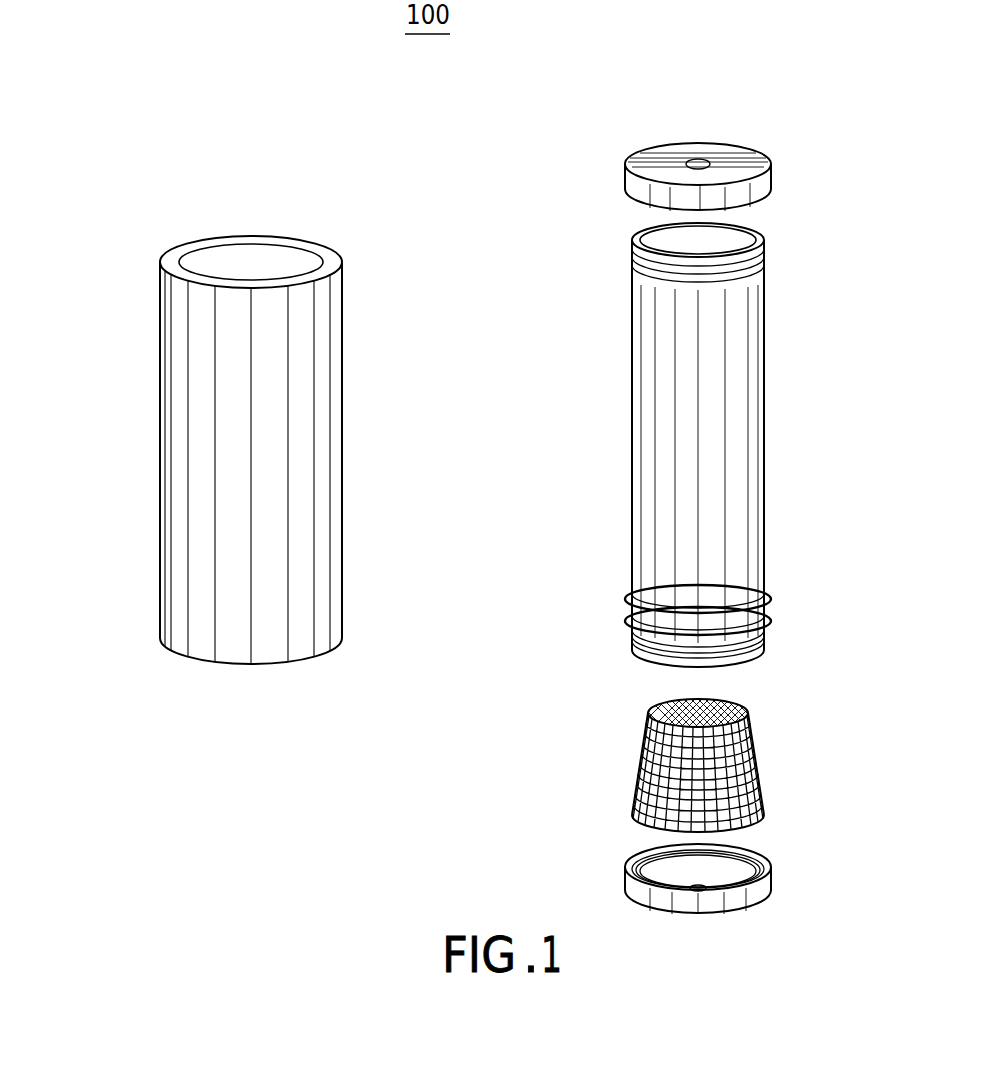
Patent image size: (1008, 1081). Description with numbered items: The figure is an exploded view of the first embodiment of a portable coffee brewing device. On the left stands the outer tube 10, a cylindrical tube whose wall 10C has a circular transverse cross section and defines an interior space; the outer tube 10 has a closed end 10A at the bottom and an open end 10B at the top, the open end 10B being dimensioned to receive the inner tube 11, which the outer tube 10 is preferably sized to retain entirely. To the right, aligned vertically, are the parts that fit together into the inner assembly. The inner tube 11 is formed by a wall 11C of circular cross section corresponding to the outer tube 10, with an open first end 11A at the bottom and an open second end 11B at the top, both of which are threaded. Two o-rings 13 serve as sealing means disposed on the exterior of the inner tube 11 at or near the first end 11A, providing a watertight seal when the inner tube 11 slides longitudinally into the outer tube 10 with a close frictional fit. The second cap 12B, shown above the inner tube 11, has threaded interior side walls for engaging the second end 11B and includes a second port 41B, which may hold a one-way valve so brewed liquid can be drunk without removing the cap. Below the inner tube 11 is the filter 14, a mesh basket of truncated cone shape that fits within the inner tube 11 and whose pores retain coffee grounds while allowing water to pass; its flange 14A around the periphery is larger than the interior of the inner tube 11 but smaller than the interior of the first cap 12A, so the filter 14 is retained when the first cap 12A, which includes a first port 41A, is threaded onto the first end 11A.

The outer tube 10 is at (246, 445).
The closed end 10A is at (160, 617).
The open end 10B is at (160, 283).
The wall 10C is at (328, 460).
The inner tube 11 is at (697, 445).
The first end 11A is at (632, 632).
The second end 11B is at (632, 260).
The wall 11C is at (748, 322).
The first cap 12A is at (713, 872).
The second cap 12B is at (728, 145).
The o-rings 13 is at (771, 620).
The filter 14 is at (686, 747).
The flange 14A is at (633, 818).
The first port 41A is at (698, 887).
The second port 41B is at (692, 162).